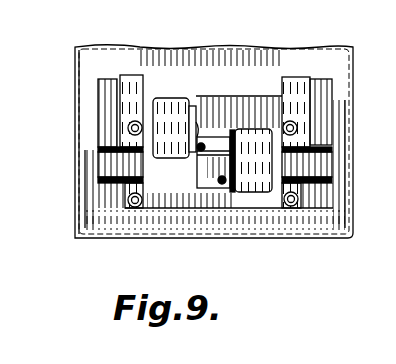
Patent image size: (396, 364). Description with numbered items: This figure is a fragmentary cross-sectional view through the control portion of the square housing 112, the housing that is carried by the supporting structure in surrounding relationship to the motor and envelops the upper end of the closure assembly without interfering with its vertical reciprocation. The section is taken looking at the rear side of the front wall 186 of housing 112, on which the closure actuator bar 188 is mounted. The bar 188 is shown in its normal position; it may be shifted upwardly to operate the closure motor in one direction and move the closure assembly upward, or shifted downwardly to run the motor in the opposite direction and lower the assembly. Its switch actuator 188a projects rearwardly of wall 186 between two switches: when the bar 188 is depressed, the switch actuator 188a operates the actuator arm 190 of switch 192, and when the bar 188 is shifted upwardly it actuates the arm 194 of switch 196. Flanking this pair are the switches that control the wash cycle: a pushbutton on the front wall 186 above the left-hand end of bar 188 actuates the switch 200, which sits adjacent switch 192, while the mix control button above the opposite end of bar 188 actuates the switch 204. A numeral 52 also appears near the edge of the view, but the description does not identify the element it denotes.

The housing 112 is at (354, 182).
The front wall 186 is at (255, 60).
The switch 204 is at (100, 92).
The closure actuator bar 188 is at (102, 177).
The switch actuator 188a is at (203, 167).
The actuator arm 190 is at (198, 123).
The switch 192 is at (172, 100).
The arm 194 is at (231, 167).
The switch 196 is at (262, 190).
The switch 200 is at (325, 100).
The frame 52 is at (389, 253).